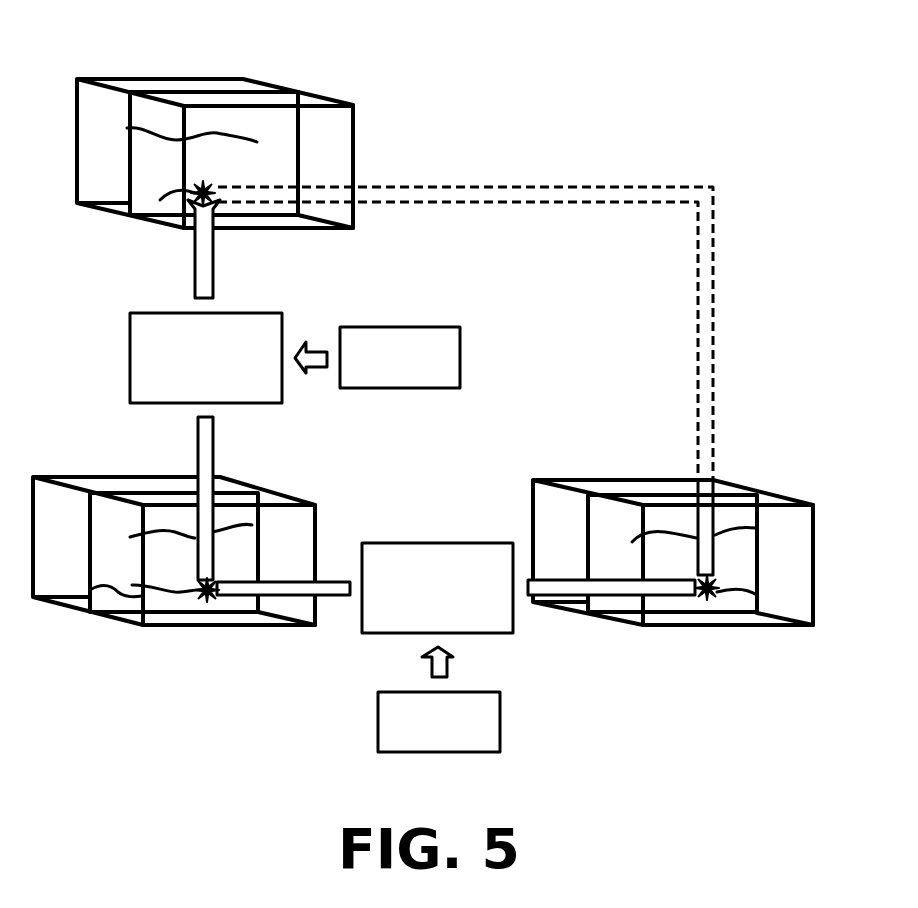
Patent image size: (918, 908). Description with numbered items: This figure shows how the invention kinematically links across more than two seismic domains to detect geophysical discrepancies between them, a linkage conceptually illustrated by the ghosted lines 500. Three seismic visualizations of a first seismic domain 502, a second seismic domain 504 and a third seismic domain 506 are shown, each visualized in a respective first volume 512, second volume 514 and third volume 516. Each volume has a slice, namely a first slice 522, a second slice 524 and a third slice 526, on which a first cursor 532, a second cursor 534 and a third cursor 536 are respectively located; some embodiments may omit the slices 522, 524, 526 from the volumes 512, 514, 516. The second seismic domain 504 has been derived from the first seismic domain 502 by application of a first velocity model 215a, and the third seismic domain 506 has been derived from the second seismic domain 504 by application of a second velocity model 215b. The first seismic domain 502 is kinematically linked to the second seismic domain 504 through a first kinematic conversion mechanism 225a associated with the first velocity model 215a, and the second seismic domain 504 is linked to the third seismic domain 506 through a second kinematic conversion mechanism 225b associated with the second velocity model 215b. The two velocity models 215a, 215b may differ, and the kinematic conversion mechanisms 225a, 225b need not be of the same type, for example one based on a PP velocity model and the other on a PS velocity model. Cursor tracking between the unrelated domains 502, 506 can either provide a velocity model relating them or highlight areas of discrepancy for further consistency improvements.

The ghosted lines 500 is at (697, 289).
The first seismic domain 502 is at (247, 80).
The second seismic domain 504 is at (315, 501).
The third seismic domain 506 is at (533, 483).
The first volume 512 is at (183, 230).
The second volume 514 is at (143, 627).
The third volume 516 is at (643, 627).
The first slice 522 is at (214, 90).
The second slice 524 is at (172, 490).
The third slice 526 is at (673, 491).
The first cursor 532 is at (205, 184).
The second cursor 534 is at (198, 583).
The third cursor 536 is at (717, 579).
The first kinematic conversion mechanism 225a is at (126, 309).
The second kinematic conversion mechanism 225b is at (432, 542).
The first velocity model 215a is at (395, 325).
The second velocity model 215b is at (500, 693).